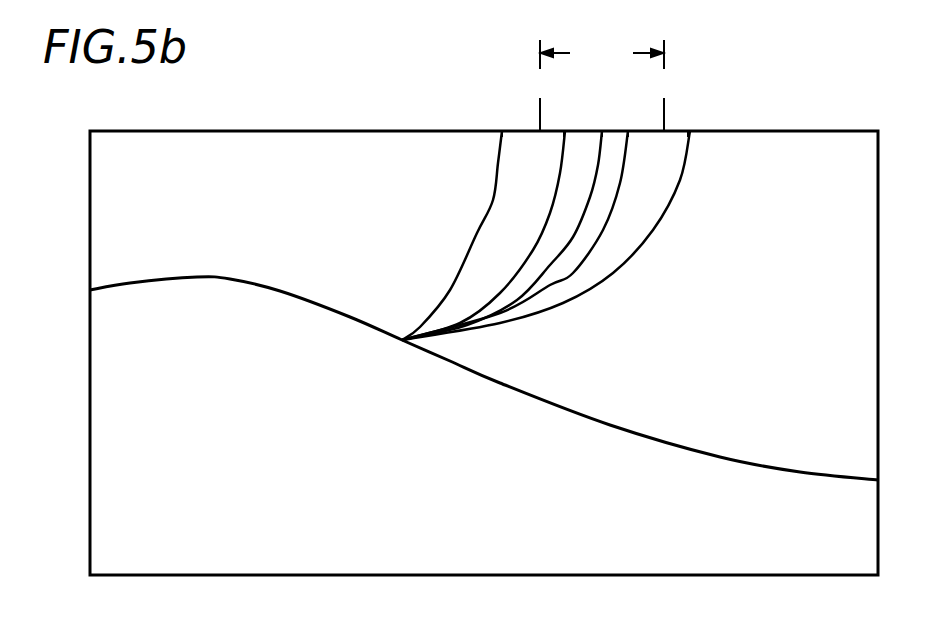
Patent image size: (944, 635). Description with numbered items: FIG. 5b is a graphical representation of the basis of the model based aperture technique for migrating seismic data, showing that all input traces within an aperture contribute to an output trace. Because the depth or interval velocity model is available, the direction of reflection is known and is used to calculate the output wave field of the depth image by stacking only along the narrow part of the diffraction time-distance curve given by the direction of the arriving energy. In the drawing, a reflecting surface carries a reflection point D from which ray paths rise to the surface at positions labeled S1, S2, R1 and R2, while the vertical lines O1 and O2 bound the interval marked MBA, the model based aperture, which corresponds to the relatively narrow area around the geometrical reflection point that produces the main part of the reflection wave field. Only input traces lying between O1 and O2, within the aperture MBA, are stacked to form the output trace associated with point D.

The detection point / branching point of the main curve D is at (484, 378).
The first trajectory curve S1 is at (461, 218).
The second trajectory curve S2 is at (492, 218).
The first reference curve R1 is at (526, 218).
The second reference curve R2 is at (557, 218).
The first boundary line O1 is at (545, 85).
The second boundary line O2 is at (668, 85).
The MBA range dimension MBA is at (602, 55).